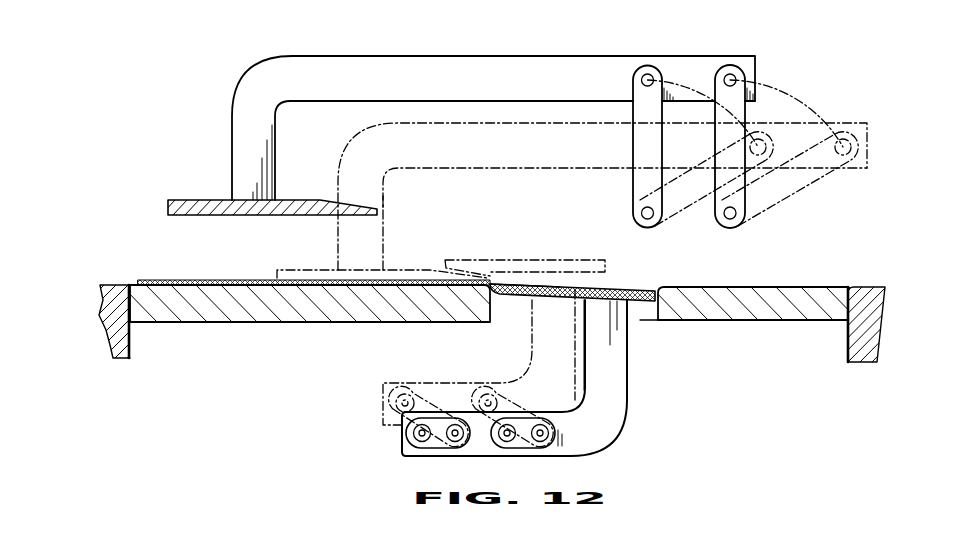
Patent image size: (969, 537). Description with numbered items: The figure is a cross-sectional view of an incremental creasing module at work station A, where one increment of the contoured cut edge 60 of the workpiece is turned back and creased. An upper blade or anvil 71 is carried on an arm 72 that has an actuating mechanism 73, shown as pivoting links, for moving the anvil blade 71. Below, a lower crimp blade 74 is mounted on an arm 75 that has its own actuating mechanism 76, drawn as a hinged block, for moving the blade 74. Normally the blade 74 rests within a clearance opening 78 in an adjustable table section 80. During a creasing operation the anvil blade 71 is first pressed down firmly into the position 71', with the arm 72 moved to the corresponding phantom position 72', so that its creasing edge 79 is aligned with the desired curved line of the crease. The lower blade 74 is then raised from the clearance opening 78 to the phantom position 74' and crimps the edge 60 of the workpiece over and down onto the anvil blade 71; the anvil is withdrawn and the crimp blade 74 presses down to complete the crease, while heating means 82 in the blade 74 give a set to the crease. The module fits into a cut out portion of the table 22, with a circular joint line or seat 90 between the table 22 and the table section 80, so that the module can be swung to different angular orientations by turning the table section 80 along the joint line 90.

The arm 72 is at (493, 110).
The arm in pressed-down position 72' is at (586, 193).
The actuating mechanism 73 is at (807, 73).
The upper blade or anvil 71 is at (270, 192).
The anvil blade pressed-down position 71' is at (382, 259).
The creasing edge 79 is at (385, 205).
The adjustable table section 80 is at (218, 316).
The table 22 is at (100, 332).
The circular joint line or seat 90 is at (128, 285).
The lower crimp blade 74 is at (590, 305).
The heating means 82 is at (617, 290).
The contoured cut edge 60 is at (540, 285).
The crimp blade raised position 74' is at (540, 256).
The clearance opening 78 is at (640, 318).
The arm 75 is at (615, 378).
The actuating mechanism 76 is at (471, 378).
The work station A is at (801, 245).